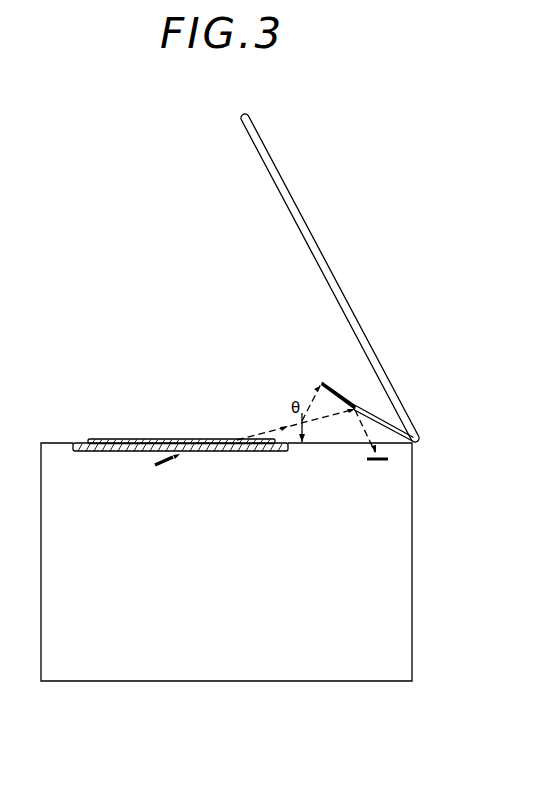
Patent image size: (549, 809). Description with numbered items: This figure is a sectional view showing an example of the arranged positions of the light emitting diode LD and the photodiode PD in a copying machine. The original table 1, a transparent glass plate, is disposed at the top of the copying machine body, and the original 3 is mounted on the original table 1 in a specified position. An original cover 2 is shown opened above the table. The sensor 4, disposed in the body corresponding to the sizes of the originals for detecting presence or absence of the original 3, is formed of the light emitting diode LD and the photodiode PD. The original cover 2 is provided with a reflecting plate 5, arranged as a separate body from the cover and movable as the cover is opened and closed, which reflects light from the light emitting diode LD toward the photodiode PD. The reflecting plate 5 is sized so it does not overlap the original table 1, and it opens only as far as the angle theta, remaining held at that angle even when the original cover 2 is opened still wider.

The original table 1 is at (82, 442).
The original cover 2 is at (318, 253).
The original 3 is at (143, 438).
The sensor 4 is at (397, 485).
The reflecting plate 5 is at (347, 392).
The light emitting diode LD is at (153, 470).
The photodiode PD is at (378, 465).